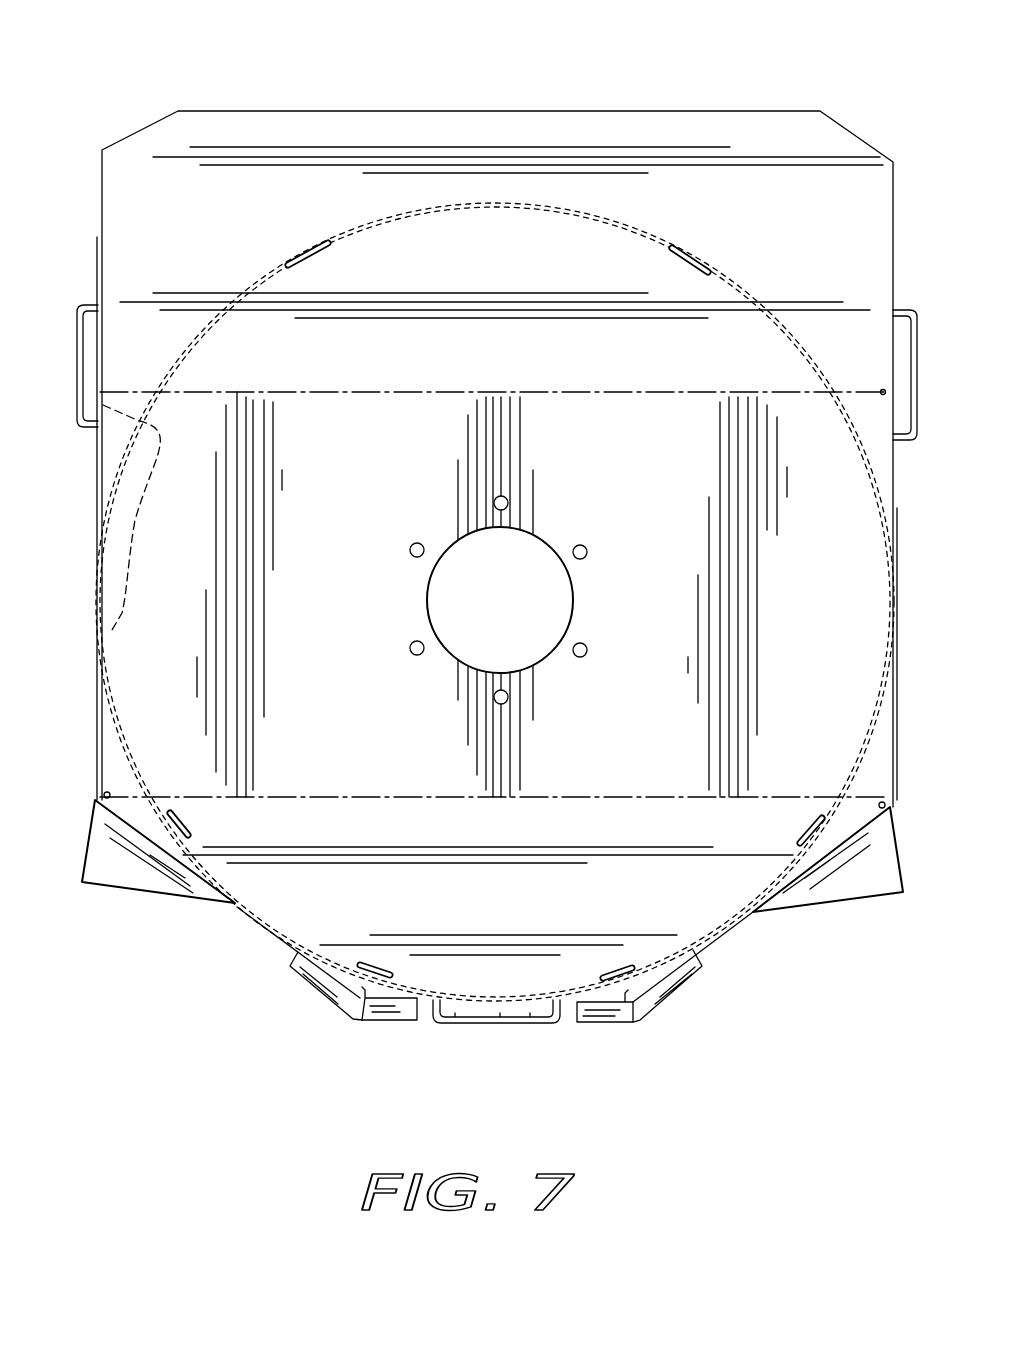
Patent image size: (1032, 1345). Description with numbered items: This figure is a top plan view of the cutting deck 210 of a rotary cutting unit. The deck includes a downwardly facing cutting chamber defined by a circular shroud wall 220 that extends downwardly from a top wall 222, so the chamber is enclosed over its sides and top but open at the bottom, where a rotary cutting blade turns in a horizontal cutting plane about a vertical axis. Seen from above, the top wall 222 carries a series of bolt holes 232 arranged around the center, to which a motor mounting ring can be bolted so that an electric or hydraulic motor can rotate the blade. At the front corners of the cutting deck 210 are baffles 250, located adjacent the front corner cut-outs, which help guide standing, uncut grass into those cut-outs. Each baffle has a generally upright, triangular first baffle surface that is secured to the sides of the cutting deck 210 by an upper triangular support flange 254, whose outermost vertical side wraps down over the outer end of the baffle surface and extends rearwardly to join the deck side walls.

The cutting deck 210 is at (303, 197).
The circular shroud wall 220 is at (657, 238).
The top wall 222 is at (356, 609).
The bolt holes 232 is at (585, 559).
The baffles 250 is at (204, 920).
The triangular support flange 254 is at (142, 878).